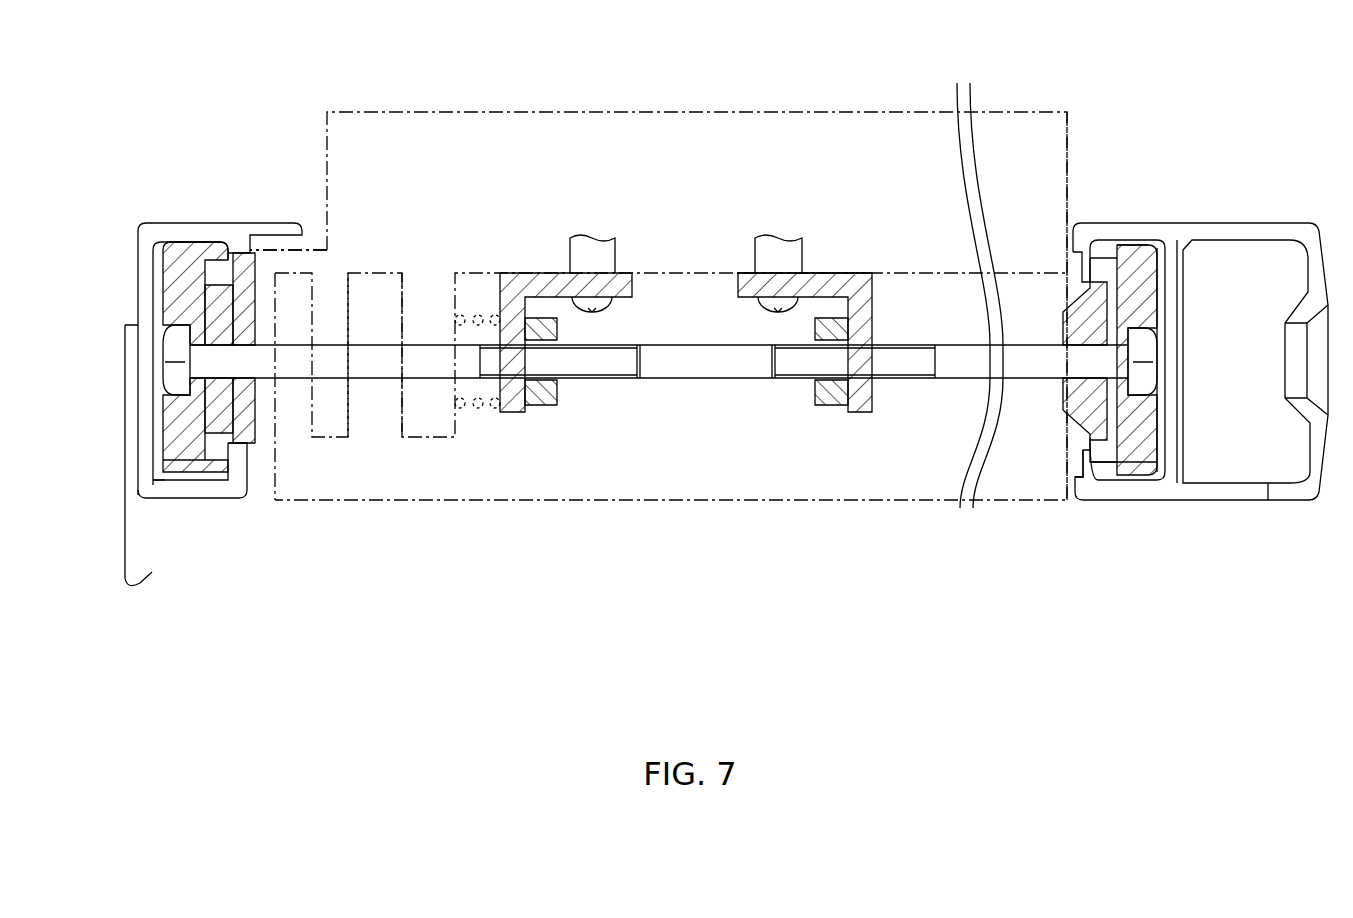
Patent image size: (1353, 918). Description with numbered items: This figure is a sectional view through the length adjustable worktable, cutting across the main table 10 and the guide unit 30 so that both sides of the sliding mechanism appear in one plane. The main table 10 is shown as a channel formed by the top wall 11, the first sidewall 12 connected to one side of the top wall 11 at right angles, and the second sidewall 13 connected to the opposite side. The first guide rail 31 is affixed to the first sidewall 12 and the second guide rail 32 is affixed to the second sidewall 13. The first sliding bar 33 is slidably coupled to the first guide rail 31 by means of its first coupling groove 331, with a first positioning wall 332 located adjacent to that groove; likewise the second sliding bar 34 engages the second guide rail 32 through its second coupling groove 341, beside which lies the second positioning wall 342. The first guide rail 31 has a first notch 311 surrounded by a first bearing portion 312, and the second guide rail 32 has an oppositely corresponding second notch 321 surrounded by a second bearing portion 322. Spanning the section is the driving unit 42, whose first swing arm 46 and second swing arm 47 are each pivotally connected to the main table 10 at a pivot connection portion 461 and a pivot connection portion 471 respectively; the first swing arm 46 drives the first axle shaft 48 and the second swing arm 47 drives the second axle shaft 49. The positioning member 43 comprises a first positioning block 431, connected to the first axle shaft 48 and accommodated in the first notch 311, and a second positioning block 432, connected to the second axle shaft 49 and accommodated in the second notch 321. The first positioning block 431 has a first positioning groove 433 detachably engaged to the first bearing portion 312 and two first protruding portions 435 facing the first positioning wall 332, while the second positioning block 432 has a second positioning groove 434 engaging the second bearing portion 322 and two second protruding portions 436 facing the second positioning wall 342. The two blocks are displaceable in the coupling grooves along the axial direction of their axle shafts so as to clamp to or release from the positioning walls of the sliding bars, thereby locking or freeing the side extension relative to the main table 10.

The main table 10 is at (437, 108).
The top wall 11 is at (572, 112).
The first sidewall 12 is at (300, 250).
The second sidewall 13 is at (1062, 302).
The guide unit 30 is at (152, 214).
The first guide rail 31 is at (248, 300).
The first notch 311 is at (232, 295).
The first bearing portion 312 is at (236, 433).
The second guide rail 32 is at (1096, 258).
The second notch 321 is at (1080, 420).
The second bearing portion 322 is at (1083, 428).
The first sliding bar 33 is at (138, 290).
The first coupling groove 331 is at (160, 482).
The first positioning wall 332 is at (236, 470).
The second sliding bar 34 is at (1240, 222).
The second coupling groove 341 is at (1163, 475).
The second positioning wall 342 is at (1086, 468).
The driving unit 42 is at (856, 268).
The positioning member 43 is at (192, 290).
The first positioning block 431 is at (213, 470).
The second positioning block 432 is at (1122, 468).
The first positioning groove 433 is at (213, 315).
The second positioning groove 434 is at (1130, 320).
The first protruding portions 435 is at (184, 238).
The second protruding portions 436 is at (1110, 250).
The first swing arm 46 is at (513, 405).
The pivot connection portion 461 is at (592, 290).
The second swing arm 47 is at (857, 405).
The pivot connection portion 471 is at (778, 290).
The first axle shaft 48 is at (600, 370).
The second axle shaft 49 is at (792, 370).